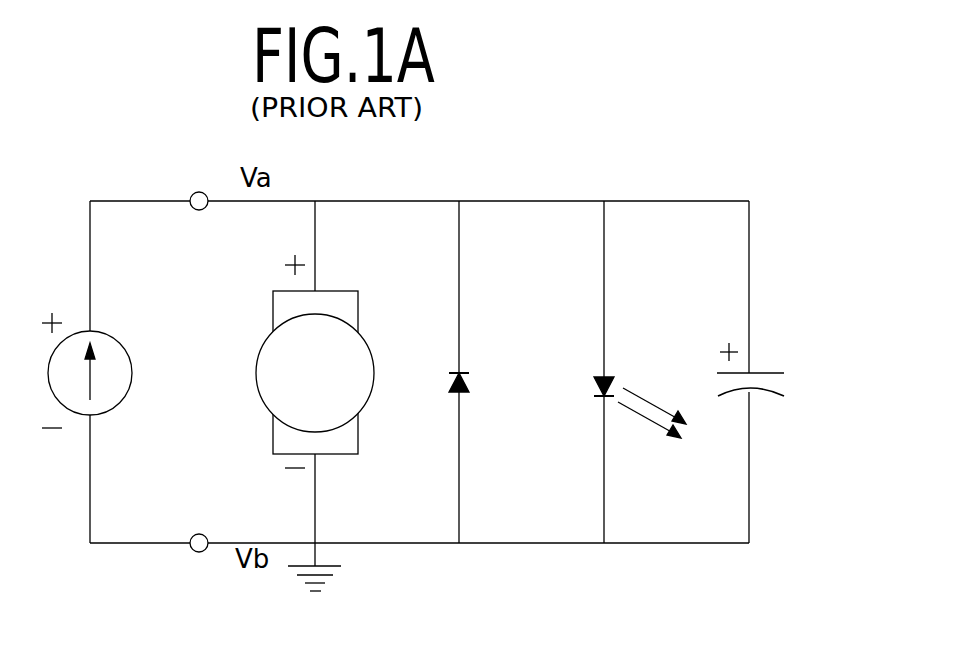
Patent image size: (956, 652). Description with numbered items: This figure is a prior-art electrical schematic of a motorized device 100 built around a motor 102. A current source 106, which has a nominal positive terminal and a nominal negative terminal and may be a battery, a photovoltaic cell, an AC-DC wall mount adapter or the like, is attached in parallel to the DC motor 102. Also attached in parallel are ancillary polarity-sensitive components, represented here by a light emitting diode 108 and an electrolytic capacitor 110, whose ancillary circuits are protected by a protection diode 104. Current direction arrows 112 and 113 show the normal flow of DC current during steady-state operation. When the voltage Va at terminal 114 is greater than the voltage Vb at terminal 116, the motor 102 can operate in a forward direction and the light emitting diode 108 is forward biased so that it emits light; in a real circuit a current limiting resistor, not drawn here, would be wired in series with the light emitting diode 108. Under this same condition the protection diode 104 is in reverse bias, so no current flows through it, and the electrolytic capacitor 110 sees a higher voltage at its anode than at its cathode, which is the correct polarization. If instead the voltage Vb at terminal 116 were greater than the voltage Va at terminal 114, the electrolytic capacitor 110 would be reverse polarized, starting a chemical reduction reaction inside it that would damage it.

The motorized device 100 is at (697, 163).
The motor 102 is at (373, 357).
The protection diode 104 is at (463, 391).
The current source 106 is at (120, 403).
The light emitting diode 108 is at (610, 398).
The electrolytic capacitor 110 is at (760, 372).
The current direction arrow 112 is at (304, 240).
The current direction arrow 113 is at (594, 240).
The terminal 114 is at (199, 192).
The terminal 116 is at (200, 552).